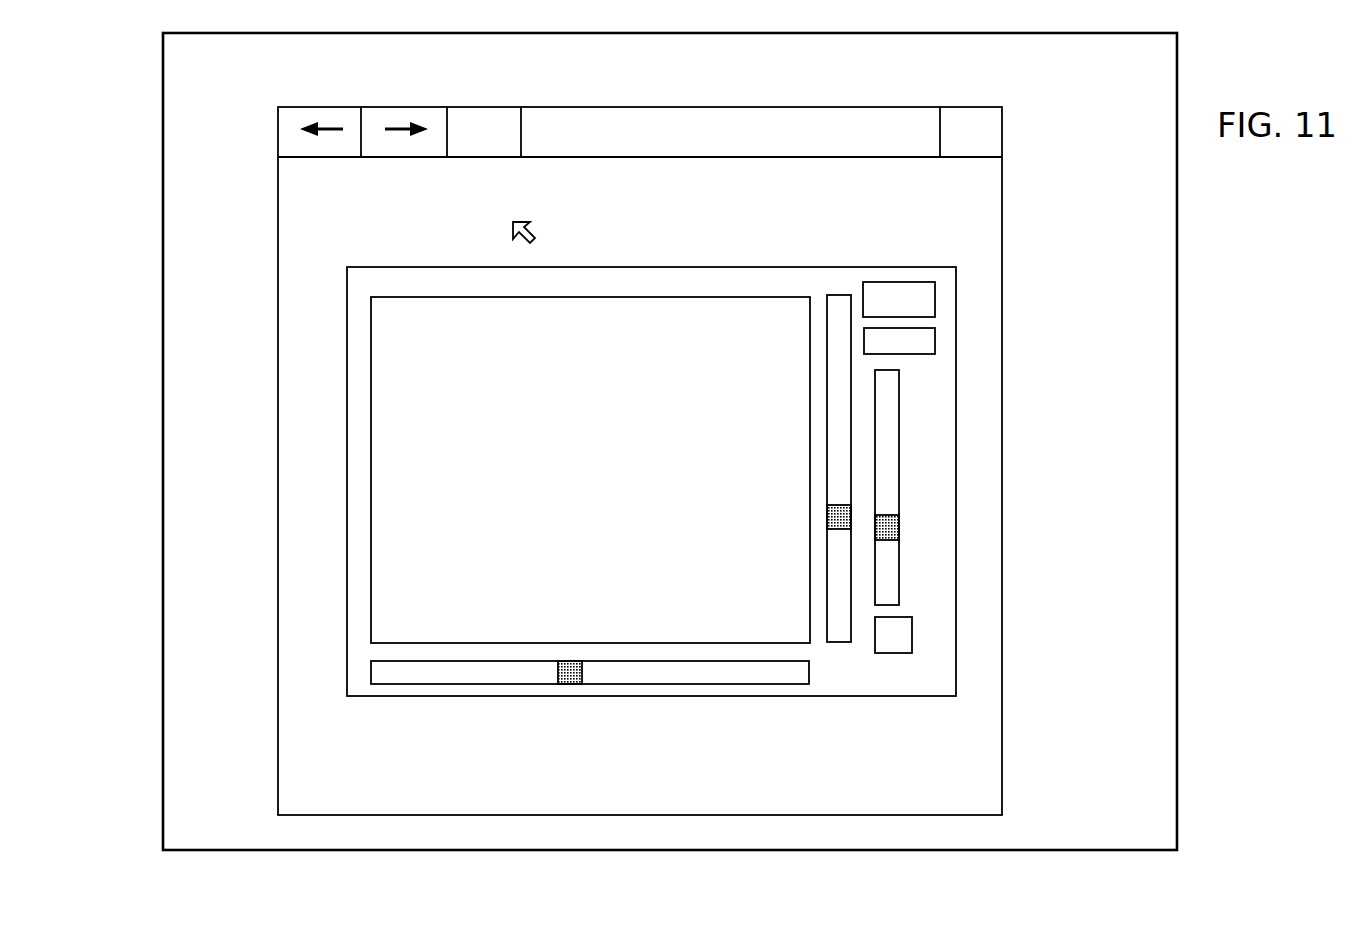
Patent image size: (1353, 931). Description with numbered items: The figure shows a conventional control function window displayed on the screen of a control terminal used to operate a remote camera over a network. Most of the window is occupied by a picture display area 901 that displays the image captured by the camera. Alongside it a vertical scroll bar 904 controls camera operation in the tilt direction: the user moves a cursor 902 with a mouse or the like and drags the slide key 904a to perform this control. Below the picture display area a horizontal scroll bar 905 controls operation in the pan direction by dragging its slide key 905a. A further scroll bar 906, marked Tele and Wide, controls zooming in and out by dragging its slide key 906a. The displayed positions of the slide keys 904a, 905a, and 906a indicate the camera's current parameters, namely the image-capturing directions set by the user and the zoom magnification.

The picture display area 901 is at (712, 305).
The mouse cursor 902 is at (536, 231).
The scroll bar 904 is at (851, 454).
The slide key 904a is at (851, 508).
The scroll bar 905 is at (708, 684).
The slide key 905a is at (569, 684).
The scroll bar 906 is at (899, 577).
The slide key 906a is at (899, 531).